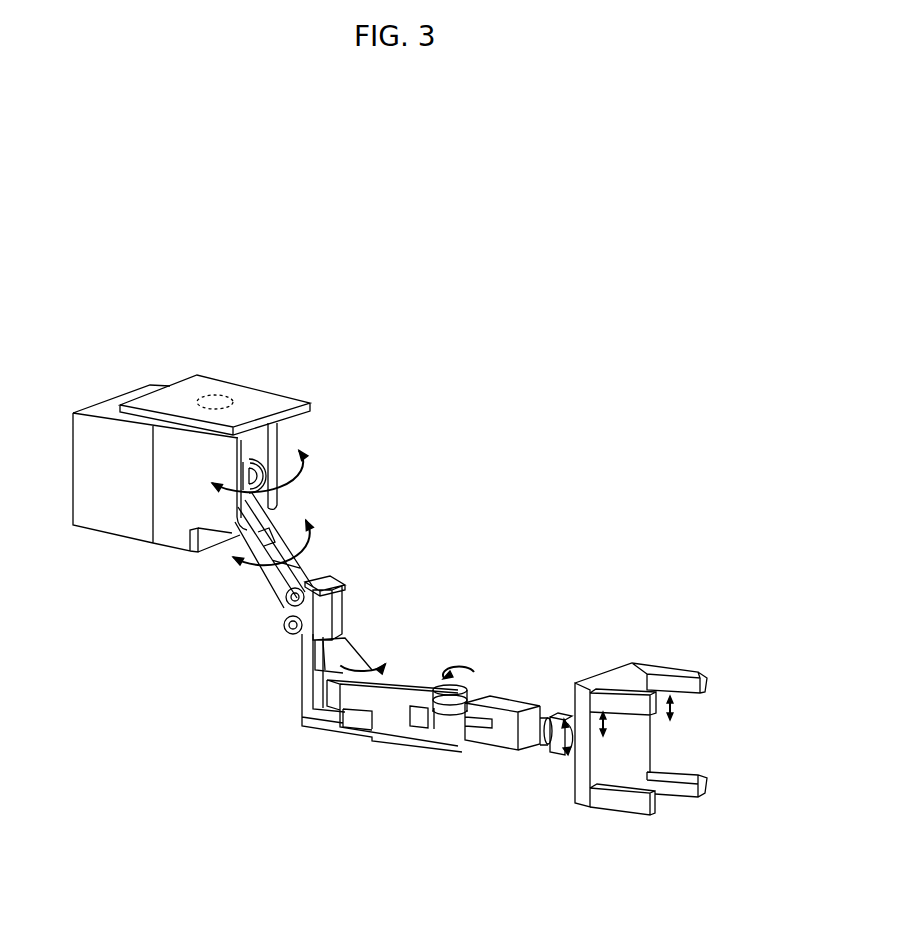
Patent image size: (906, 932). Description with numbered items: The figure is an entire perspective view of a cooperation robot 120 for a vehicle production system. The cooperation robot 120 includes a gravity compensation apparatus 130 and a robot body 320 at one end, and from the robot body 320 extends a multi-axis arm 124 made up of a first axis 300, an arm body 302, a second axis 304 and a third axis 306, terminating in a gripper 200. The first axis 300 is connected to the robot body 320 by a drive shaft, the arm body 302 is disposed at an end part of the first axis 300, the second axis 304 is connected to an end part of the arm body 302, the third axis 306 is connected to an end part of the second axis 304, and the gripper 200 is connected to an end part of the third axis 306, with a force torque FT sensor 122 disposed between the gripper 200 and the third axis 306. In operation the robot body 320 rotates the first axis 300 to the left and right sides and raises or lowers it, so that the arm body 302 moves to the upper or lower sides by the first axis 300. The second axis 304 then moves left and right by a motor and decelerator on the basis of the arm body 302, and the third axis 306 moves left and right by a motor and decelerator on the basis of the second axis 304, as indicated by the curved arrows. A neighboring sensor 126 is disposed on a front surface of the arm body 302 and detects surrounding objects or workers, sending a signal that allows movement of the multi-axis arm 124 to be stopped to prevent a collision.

The cooperation robot 120 is at (430, 522).
The FT sensor 122 is at (543, 753).
The multi-axis arm 124 is at (372, 678).
The neighboring sensor 126 is at (343, 610).
The gravity compensation apparatus 130 is at (118, 523).
The gripper 200 is at (582, 810).
The first axis 300 is at (268, 575).
The arm body 302 is at (305, 688).
The second axis 304 is at (397, 725).
The third axis 306 is at (501, 772).
The robot body 320 is at (212, 380).